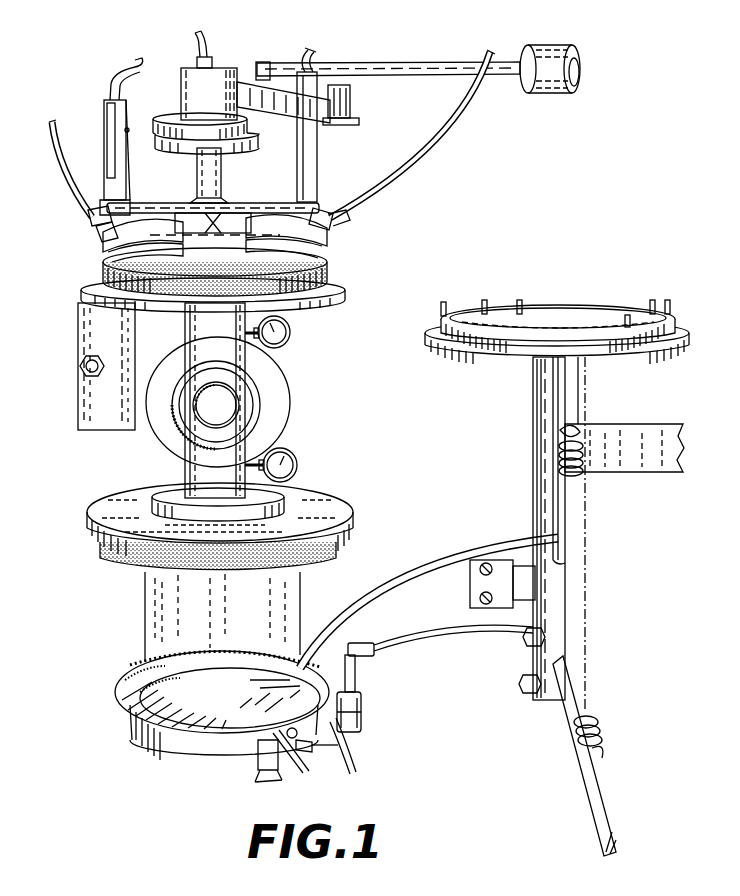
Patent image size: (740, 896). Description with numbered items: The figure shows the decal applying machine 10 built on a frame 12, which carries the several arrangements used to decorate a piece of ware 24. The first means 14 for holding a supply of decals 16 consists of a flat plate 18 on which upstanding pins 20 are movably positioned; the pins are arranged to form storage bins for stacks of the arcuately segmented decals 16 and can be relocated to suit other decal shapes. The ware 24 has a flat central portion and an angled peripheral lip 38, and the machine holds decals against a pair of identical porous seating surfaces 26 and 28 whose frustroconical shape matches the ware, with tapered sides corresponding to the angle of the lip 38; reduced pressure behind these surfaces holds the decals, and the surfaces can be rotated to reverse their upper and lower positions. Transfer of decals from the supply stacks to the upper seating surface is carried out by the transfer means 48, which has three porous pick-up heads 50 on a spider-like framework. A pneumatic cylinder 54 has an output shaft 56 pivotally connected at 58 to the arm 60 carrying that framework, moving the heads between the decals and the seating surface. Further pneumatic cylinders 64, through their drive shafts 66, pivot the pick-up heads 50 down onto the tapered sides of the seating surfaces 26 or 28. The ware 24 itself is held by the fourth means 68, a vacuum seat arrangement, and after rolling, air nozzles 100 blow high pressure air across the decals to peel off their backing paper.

The machine 10 is at (325, 347).
The frame 12 is at (370, 268).
The first means for holding a supply of decals 14 is at (557, 544).
The decals 16 is at (531, 344).
The flat plate 18 is at (622, 350).
The upstanding pins 20 is at (531, 300).
The piece of ware 24 is at (324, 656).
The porous seating surface 26 is at (102, 272).
The porous seating surface 28 is at (102, 557).
The lip 38 is at (118, 693).
The transfer means 48 is at (378, 86).
The porous pick-up heads 50 is at (100, 234).
The pneumatic cylinder 54 is at (566, 48).
The output shaft 56 is at (446, 68).
The pivotal connection 58 is at (264, 62).
The arm 60 is at (279, 104).
The pneumatic cylinders 64 is at (104, 120).
The drive shafts 66 is at (106, 186).
The fourth means for holding the piece of ware 68 is at (135, 782).
The air nozzles 100 is at (276, 772).